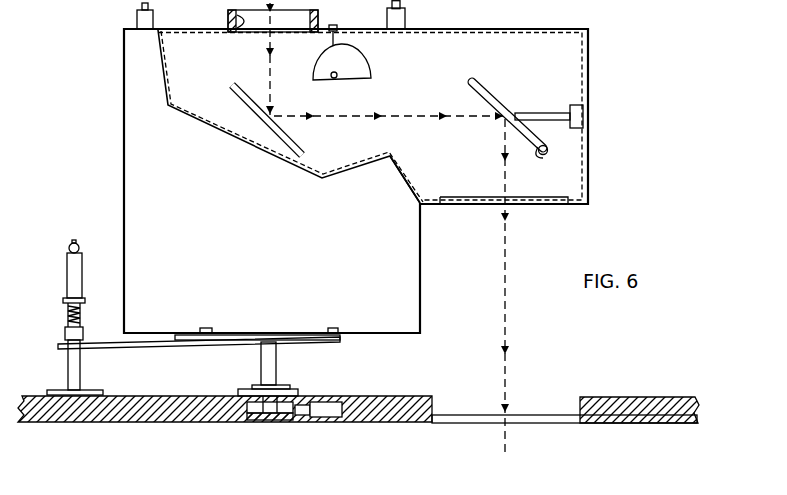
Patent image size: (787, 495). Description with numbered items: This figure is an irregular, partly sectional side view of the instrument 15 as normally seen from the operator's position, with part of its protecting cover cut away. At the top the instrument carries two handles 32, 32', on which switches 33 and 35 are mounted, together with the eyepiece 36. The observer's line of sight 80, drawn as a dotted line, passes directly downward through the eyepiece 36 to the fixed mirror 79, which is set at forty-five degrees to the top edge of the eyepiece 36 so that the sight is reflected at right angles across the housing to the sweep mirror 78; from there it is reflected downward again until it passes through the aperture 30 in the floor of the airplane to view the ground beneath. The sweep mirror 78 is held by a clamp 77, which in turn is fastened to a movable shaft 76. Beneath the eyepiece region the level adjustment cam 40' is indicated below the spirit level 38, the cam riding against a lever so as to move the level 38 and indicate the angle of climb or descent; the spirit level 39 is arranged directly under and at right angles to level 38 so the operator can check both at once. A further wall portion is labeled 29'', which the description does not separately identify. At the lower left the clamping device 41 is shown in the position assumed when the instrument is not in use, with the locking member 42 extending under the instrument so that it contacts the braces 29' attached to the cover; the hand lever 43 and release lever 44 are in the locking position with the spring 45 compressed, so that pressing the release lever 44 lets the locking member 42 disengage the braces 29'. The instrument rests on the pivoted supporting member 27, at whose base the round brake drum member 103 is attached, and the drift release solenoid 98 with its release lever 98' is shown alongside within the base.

The instrument 15 is at (122, 144).
The pivoted supporting member 27 is at (278, 362).
The braces 29' is at (257, 309).
The inclined wall 29'' is at (425, 179).
The aperture 30 is at (578, 399).
The handle 32 is at (414, 29).
The handle 32' is at (115, 29).
The switch 33 is at (141, 5).
The switch 35 is at (401, 3).
The eyepiece 36 is at (242, 32).
The spirit level 38 is at (333, 25).
The spirit level 39 is at (330, 33).
The level adjustment cam 40' is at (360, 62).
The clamping device 41 is at (66, 366).
The locking member 42 is at (120, 349).
The hand lever 43 is at (68, 256).
The release lever 44 is at (75, 242).
The spring 45 is at (66, 312).
The movable shaft 76 is at (550, 113).
The clamp 77 is at (484, 80).
The sweep mirror 78 is at (536, 152).
The fixed mirror 79 is at (300, 137).
The line of sight 80 is at (400, 115).
The drift release solenoid 98 is at (326, 428).
The release lever 98' is at (301, 435).
The round brake drum member 103 is at (265, 422).